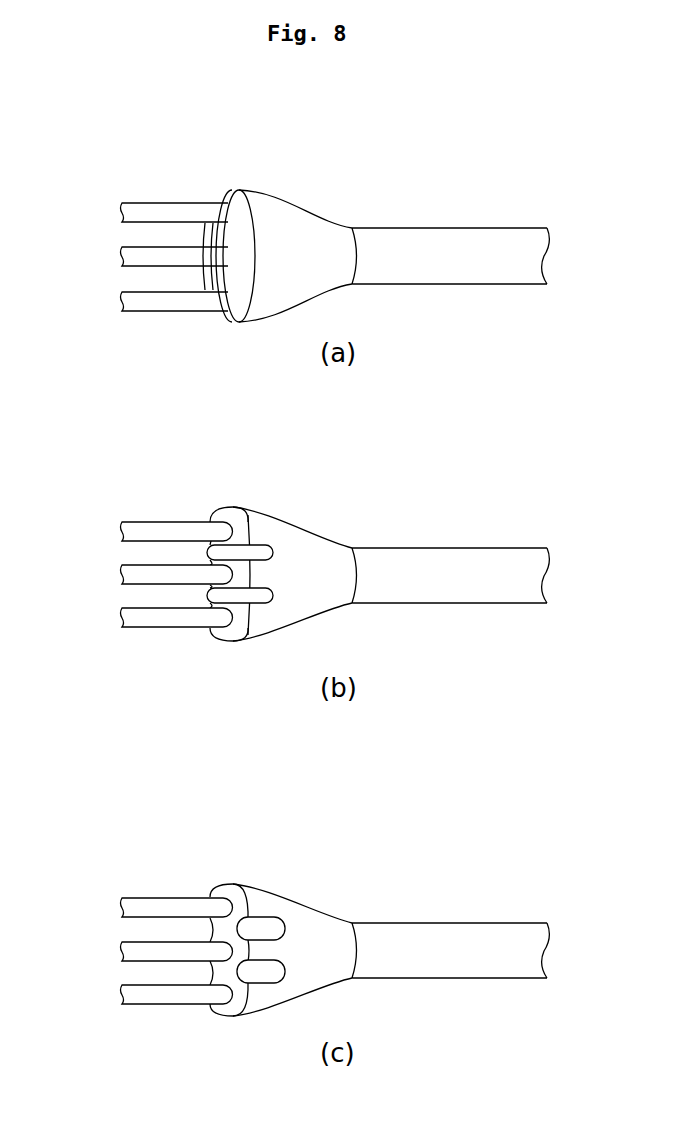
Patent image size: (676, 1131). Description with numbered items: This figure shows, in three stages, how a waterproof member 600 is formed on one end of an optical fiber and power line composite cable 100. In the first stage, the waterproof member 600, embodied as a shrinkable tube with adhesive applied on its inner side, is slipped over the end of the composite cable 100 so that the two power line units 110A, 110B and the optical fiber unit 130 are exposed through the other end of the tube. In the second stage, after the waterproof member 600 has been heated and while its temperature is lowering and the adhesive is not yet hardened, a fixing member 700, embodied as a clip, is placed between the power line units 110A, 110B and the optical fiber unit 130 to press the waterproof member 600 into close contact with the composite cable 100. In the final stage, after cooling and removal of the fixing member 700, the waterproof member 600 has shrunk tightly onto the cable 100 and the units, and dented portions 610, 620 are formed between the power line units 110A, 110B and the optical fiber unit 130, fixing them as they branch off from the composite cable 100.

The optical fiber and power line composite cable 100 is at (452, 240).
The power line unit 110A is at (160, 210).
The power line unit 110B is at (160, 300).
The optical fiber unit 130 is at (130, 258).
The waterproof member 600 is at (286, 217).
The dented portion 610 is at (262, 930).
The dented portion 620 is at (262, 975).
The fixing member 700 is at (265, 552).